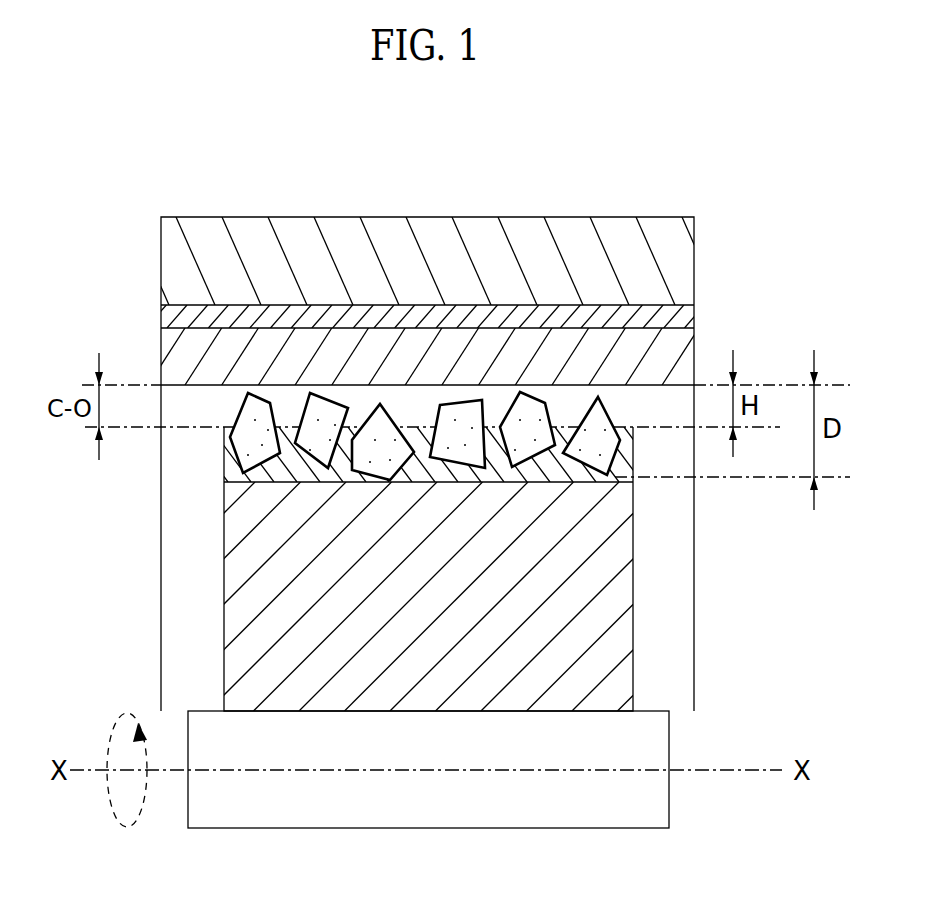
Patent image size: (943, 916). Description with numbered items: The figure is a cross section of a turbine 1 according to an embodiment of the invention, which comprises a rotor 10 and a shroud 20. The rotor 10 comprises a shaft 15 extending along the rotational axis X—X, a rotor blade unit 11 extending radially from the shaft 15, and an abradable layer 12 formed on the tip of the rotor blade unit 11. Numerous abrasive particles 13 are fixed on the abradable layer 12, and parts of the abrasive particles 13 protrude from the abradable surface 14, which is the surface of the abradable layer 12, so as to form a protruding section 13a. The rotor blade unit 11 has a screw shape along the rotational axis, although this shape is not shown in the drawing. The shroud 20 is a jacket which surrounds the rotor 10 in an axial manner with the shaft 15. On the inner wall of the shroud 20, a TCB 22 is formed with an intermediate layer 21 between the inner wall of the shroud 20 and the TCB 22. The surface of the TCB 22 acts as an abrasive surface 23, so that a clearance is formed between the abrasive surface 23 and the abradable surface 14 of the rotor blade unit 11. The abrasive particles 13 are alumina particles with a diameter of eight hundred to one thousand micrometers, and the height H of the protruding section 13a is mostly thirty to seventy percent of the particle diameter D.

The turbine 1 is at (247, 186).
The rotor 10 is at (216, 667).
The rotor blade unit 11 is at (223, 595).
The abradable layer 12 is at (223, 469).
The abrasive particles 13 is at (380, 403).
The protruding section 13a is at (600, 408).
The abradable surface 14 is at (562, 425).
The shaft 15 is at (653, 711).
The shroud 20 is at (184, 206).
The intermediate layer 21 is at (161, 320).
The TCB 22 is at (161, 353).
The abrasive surface 23 is at (210, 386).